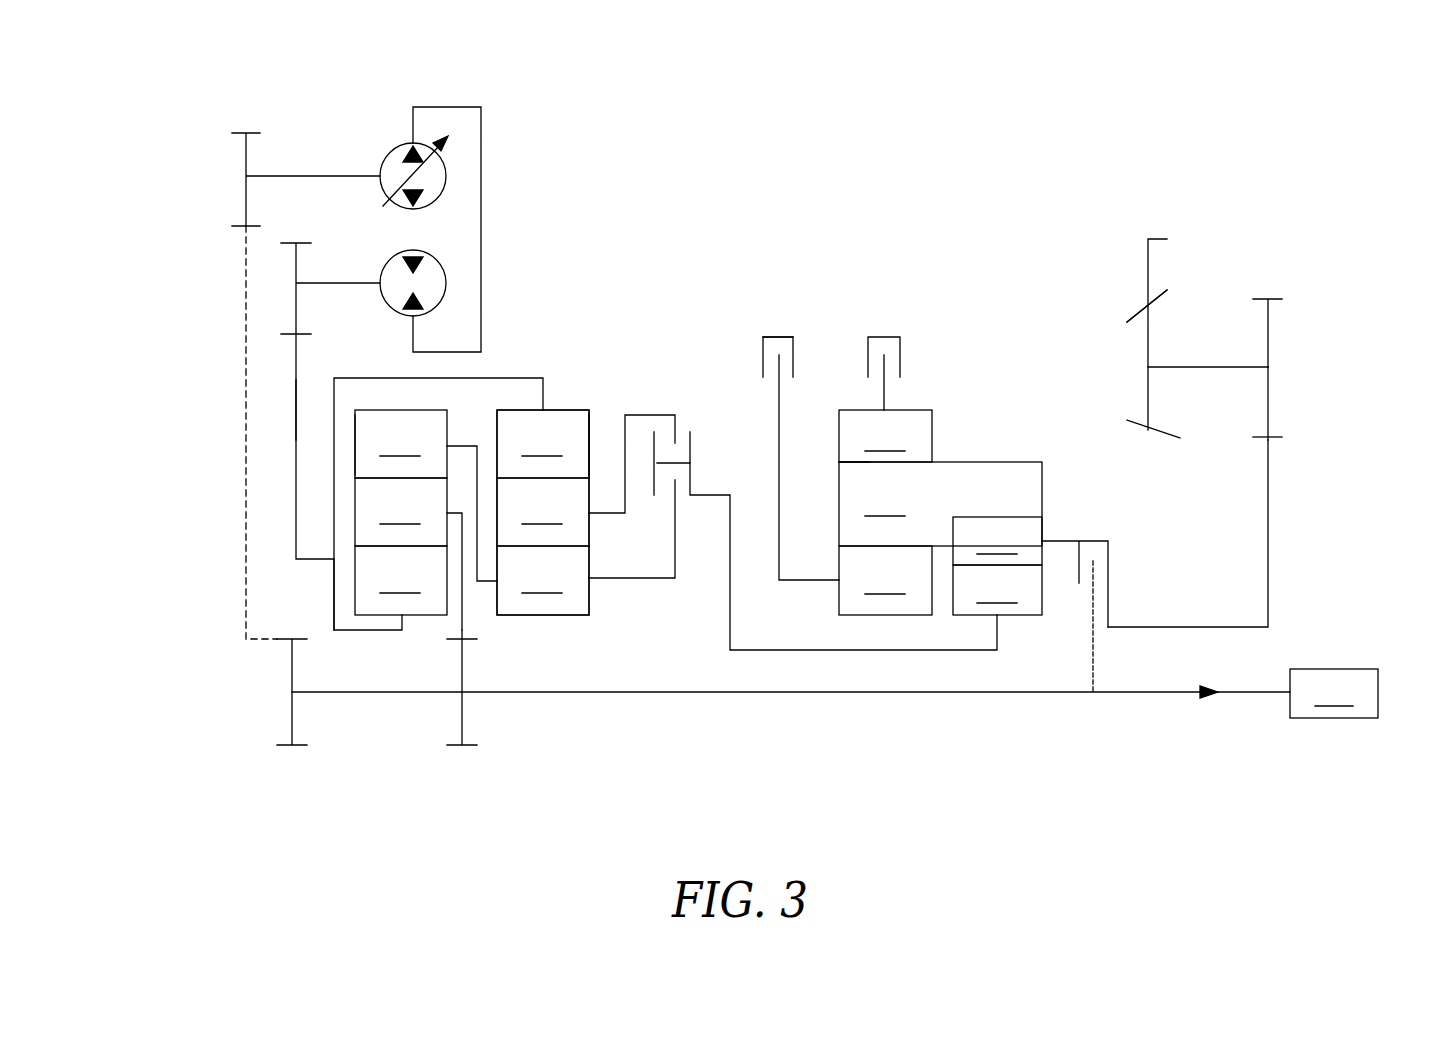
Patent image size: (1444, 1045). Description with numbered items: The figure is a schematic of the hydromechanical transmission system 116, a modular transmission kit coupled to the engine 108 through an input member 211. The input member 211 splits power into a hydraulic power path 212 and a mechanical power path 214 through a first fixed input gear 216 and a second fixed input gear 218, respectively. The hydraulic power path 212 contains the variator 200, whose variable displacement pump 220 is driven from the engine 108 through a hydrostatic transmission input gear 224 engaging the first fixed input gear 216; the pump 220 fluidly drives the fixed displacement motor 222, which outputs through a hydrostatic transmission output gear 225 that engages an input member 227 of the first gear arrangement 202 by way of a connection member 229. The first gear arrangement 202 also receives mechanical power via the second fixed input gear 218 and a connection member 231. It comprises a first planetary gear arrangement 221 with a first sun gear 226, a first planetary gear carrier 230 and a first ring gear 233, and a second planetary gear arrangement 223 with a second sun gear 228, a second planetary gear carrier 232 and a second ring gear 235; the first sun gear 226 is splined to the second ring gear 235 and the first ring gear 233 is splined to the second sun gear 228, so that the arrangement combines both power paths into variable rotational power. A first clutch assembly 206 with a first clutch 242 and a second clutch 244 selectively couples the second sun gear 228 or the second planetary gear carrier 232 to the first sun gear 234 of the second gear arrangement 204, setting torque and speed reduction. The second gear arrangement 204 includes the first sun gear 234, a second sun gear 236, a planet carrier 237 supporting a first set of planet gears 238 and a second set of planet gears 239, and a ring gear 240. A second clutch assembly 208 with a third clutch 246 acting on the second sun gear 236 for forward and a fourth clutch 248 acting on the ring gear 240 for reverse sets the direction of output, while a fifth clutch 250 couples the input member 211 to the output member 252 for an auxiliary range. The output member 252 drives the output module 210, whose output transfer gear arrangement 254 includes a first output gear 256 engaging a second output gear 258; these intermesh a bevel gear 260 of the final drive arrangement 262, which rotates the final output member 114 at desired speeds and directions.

The variator 200 is at (480, 212).
The variable displacement pump 220 is at (446, 173).
The fixed displacement motor 222 is at (446, 248).
The hydrostatic transmission input gear 224 is at (246, 157).
The hydrostatic transmission output gear 225 is at (296, 258).
The hydraulic power path 212 is at (200, 464).
The connection member 229 is at (296, 411).
The mechanical power path 214 is at (514, 367).
The input member 227 is at (334, 593).
The first ring gear 233 is at (401, 444).
The first planetary gear carrier 230 is at (401, 512).
The first sun gear 226 is at (401, 580).
The first planetary gear arrangement 221 is at (352, 443).
The first gear arrangement 202 is at (569, 392).
The second ring gear 235 is at (543, 444).
The second planetary gear carrier 232 is at (543, 512).
The second sun gear 228 is at (543, 580).
The second planetary gear arrangement 223 is at (594, 427).
The connection member 231 is at (462, 609).
The second fixed input gear 218 is at (462, 727).
The first clutch assembly 206 is at (643, 395).
The first clutch 242 is at (690, 443).
The second clutch 244 is at (692, 483).
The third clutch 246 is at (772, 337).
The fourth clutch 248 is at (888, 337).
The second clutch assembly 208 is at (943, 334).
The second gear arrangement 204 is at (927, 488).
The ring gear 240 is at (885, 436).
The planet carrier 237 is at (940, 504).
The second sun gear 236 is at (885, 580).
The first set of planet gears 238 is at (997, 541).
The first sun gear 234 is at (997, 590).
The second set of planet gears 239 is at (857, 460).
The fifth clutch 250 is at (1108, 545).
The output member 252 is at (1268, 558).
The final output member 114 is at (1152, 238).
The final drive arrangement 262 is at (1088, 303).
The bevel gear 260 is at (1137, 362).
The output module 210 is at (1329, 324).
The second output gear 258 is at (1268, 328).
The first output gear 256 is at (1270, 378).
The output transfer gear arrangement 254 is at (1283, 418).
The transmission system 116 is at (1303, 112).
The first fixed input gear 216 is at (292, 707).
The input member 211 is at (380, 692).
The engine 108 is at (1334, 693).